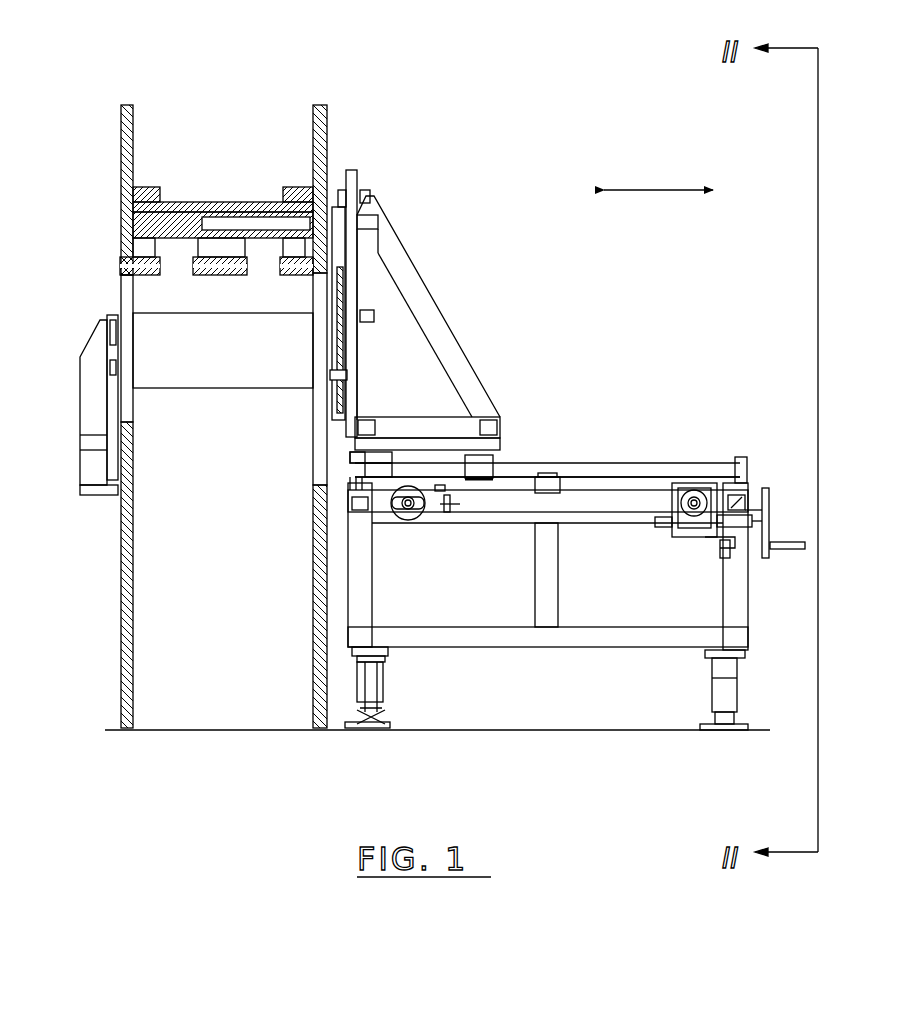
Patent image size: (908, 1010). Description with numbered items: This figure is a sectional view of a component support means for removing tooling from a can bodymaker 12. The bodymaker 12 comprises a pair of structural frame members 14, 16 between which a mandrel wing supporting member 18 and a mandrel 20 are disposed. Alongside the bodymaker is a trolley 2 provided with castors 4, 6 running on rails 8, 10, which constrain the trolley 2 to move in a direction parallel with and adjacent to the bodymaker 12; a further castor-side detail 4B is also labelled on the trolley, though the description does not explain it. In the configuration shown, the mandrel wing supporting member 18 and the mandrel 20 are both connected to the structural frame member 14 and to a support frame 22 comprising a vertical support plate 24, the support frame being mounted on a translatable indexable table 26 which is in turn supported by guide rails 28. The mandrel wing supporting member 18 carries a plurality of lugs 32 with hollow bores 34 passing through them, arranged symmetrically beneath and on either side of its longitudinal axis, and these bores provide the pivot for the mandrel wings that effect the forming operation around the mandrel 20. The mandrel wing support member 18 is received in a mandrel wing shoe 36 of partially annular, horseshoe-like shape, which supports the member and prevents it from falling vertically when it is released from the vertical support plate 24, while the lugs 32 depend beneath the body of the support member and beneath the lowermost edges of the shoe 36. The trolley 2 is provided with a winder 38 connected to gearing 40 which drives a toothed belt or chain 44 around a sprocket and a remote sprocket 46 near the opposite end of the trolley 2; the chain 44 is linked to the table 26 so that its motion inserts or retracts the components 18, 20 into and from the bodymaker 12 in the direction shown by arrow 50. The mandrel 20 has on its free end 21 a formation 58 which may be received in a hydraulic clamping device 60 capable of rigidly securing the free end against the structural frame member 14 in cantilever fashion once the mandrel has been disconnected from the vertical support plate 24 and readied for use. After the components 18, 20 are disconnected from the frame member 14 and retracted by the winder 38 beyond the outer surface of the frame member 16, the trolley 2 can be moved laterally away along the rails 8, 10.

The trolley 2 is at (576, 683).
The castor 4 is at (380, 687).
The guide member 4B is at (478, 483).
The castor 6 is at (725, 687).
The rail 8 is at (372, 730).
The rail 10 is at (728, 730).
The bodymaker 12 is at (106, 81).
The structural frame member 14 is at (120, 573).
The structural frame member 16 is at (313, 566).
The mandrel wing supporting member 18 is at (133, 200).
The mandrel 20 is at (120, 508).
The free end 21 is at (128, 310).
The support frame 22 is at (440, 298).
The vertical support plate 24 is at (398, 265).
The translatable indexable table 26 is at (482, 458).
The guide rail 28 is at (578, 478).
The lugs 32 is at (283, 255).
The hollow bores 34 is at (280, 263).
The mandrel wing shoe 36 is at (193, 207).
The winder 38 is at (768, 550).
The gearing 40 is at (745, 490).
The toothed belt or chain 44 is at (478, 515).
The remote sprocket 46 is at (410, 517).
The arrow 50 is at (674, 187).
The formation 58 is at (115, 330).
The hydraulic clamping device 60 is at (93, 403).